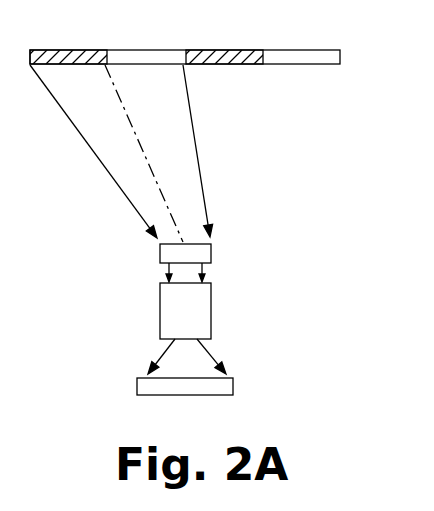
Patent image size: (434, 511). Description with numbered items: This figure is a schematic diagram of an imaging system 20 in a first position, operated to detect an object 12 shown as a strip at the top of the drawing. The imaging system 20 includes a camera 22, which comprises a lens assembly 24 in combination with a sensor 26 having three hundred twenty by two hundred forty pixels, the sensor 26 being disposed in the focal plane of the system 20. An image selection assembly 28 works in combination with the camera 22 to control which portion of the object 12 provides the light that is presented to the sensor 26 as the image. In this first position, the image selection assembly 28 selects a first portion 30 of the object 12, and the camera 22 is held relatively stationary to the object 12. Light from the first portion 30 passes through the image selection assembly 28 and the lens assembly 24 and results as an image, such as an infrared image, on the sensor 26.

The object 12 is at (303, 50).
The first portion 30 is at (30, 39).
The imaging system 20 is at (125, 243).
The camera 22 is at (268, 283).
The lens assembly 24 is at (211, 306).
The sensor 26 is at (205, 395).
The image selection assembly 28 is at (211, 252).